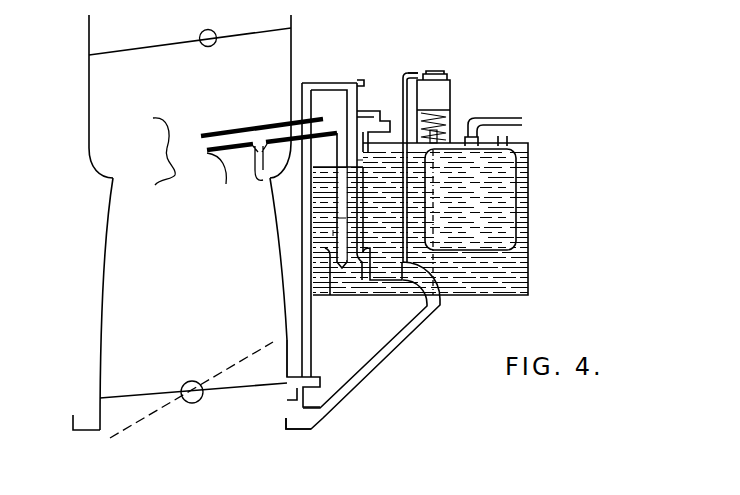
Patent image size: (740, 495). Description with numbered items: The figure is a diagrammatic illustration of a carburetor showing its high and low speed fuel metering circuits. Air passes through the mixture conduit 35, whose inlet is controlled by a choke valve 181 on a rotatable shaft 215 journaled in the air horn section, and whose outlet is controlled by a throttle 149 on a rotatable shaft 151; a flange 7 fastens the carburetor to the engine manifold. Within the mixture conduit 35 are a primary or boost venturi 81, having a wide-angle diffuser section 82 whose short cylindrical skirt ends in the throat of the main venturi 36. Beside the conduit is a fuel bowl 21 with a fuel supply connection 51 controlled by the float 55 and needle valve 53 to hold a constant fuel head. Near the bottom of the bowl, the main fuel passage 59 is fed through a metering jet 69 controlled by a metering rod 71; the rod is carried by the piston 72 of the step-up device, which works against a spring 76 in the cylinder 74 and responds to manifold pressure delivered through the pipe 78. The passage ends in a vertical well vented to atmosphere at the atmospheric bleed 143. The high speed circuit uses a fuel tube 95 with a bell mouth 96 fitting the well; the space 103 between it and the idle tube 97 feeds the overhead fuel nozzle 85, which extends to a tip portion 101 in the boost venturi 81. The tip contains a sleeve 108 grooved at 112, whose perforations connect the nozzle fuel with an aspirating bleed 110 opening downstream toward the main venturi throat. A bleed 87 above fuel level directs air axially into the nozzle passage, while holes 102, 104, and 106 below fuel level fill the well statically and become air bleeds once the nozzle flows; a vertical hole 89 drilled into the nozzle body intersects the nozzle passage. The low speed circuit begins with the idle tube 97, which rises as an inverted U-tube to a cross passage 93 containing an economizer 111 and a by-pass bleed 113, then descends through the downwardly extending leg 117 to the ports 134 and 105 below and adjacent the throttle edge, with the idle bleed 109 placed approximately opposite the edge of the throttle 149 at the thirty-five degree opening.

The flange 7 is at (78, 428).
The fuel bowl 21 is at (524, 272).
The mixture conduit 35 is at (198, 306).
The main venturi 36 is at (117, 211).
The fuel supply connection 51 is at (523, 120).
The needle valve 53 is at (475, 141).
The float 55 is at (514, 160).
The main fuel passage 59 is at (345, 288).
The metering jet 69 is at (444, 282).
The metering rod 71 is at (421, 70).
The piston 72 is at (446, 92).
The cylinder 74 is at (450, 109).
The spring 76 is at (447, 132).
The pipe 78 is at (408, 332).
The boost venturi 81 is at (163, 146).
The diffuser section 82 is at (170, 176).
The fuel nozzle 85 is at (322, 126).
The bleed 87 is at (383, 119).
The vertical hole 89 is at (504, 133).
The cross passage 93 is at (343, 83).
The fuel tube 95 is at (364, 197).
The bell mouth 96 is at (370, 278).
The idle tube 97 is at (350, 200).
The tip portion 101 is at (203, 135).
The hole 102 is at (333, 233).
The space 103 is at (338, 220).
The hole 104 is at (366, 228).
The port 105 is at (286, 384).
The hole 106 is at (366, 240).
The sleeve 108 is at (207, 150).
The idle bleed 109 is at (285, 340).
The bleed 110 is at (260, 173).
The economizer 111 is at (330, 83).
The groove 112 is at (250, 131).
The by-pass bleed 113 is at (362, 83).
The downwardly extending leg 117 is at (302, 102).
The port 134 is at (286, 406).
The atmospheric bleed 143 is at (403, 107).
The throttle 149 is at (138, 396).
The shaft 151 is at (193, 403).
The choke valve 181 is at (110, 56).
The shaft 215 is at (214, 30).